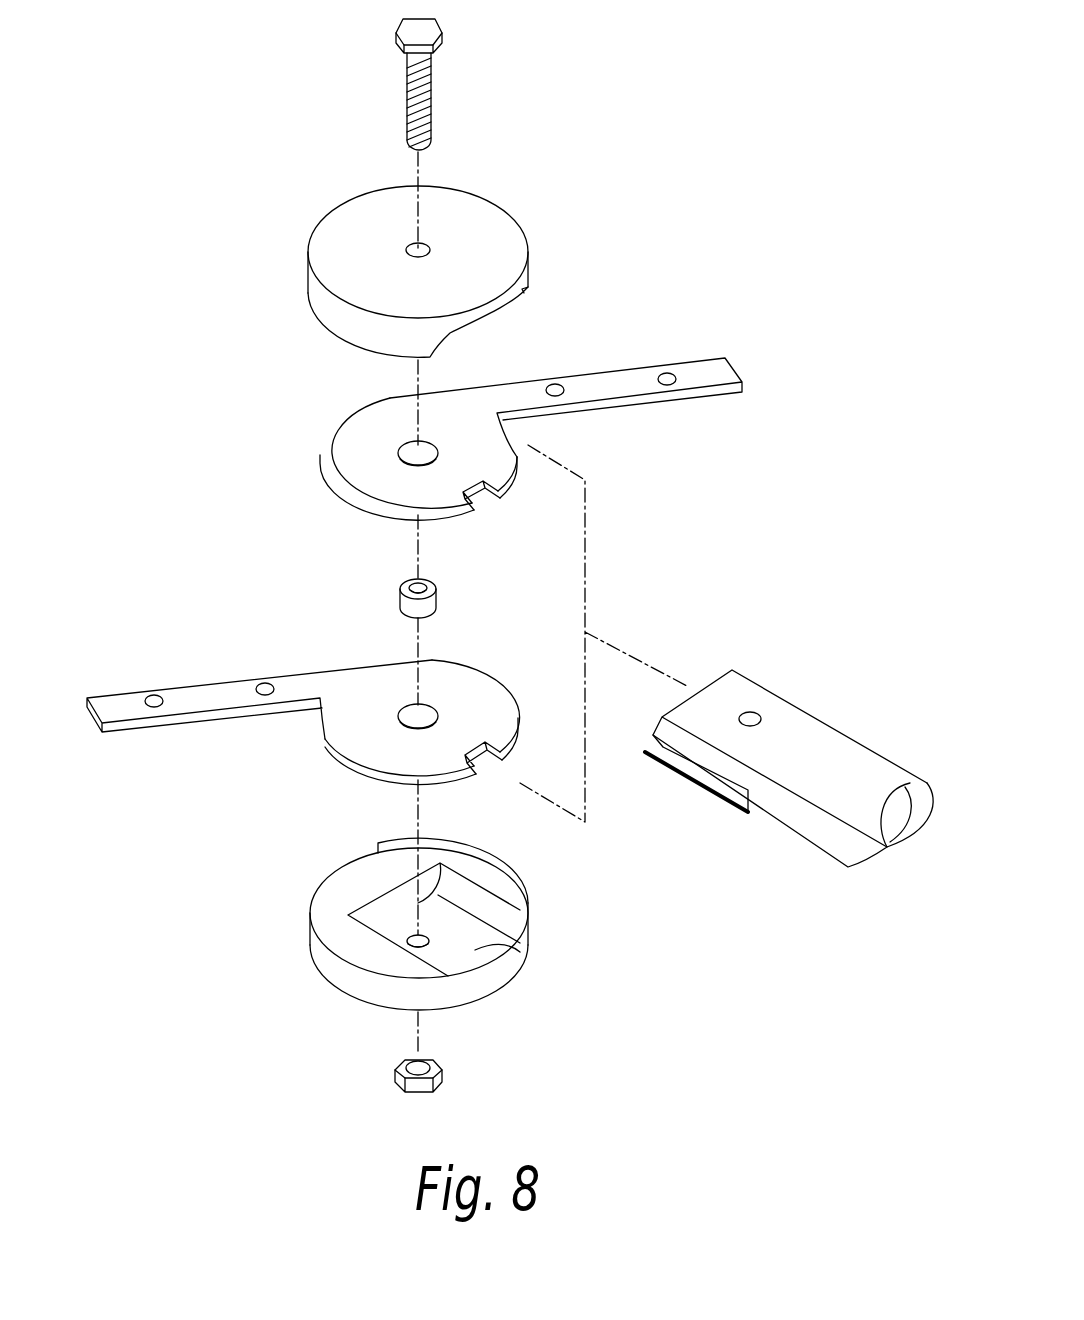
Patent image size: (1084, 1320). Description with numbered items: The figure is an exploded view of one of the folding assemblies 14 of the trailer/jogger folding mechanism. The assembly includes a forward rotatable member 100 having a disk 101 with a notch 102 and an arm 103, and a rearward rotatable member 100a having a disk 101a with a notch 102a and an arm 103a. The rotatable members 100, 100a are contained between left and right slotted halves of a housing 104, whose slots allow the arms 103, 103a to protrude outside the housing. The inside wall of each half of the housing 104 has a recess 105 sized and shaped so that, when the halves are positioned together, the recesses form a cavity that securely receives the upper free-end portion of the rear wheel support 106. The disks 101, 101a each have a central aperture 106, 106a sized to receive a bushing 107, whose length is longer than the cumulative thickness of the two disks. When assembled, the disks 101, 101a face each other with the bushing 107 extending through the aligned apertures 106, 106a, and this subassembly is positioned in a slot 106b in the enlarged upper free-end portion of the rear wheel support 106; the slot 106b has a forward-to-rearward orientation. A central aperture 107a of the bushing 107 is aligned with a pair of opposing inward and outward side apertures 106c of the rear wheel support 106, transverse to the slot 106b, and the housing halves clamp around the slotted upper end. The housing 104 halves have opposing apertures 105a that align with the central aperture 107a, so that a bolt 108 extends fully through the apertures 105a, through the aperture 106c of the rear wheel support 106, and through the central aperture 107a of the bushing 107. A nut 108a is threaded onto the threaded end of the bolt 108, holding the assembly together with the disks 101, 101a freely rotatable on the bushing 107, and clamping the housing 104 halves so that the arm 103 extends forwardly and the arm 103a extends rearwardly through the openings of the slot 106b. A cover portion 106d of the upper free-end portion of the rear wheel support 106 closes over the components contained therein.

The folding assembly 14 is at (686, 96).
The forward rotatable member 100 is at (608, 368).
The rearward rotatable member 100a is at (208, 715).
The disk 101 is at (318, 432).
The disk 101a is at (352, 765).
The notch 102 is at (483, 498).
The notch 102a is at (480, 757).
The arm 103 is at (710, 370).
The arm 103a is at (207, 688).
The housing 104 is at (308, 280).
The recess 105 is at (493, 310).
The apertures 105a is at (428, 248).
The rear wheel support 106 is at (408, 440).
The central aperture 106a is at (407, 707).
The slot 106b is at (705, 775).
The side apertures 106c is at (752, 717).
The cover portion 106d is at (848, 767).
The bushing 107 is at (435, 602).
The central aperture 107a is at (415, 582).
The bolt 108 is at (407, 98).
The nut 108a is at (442, 1077).